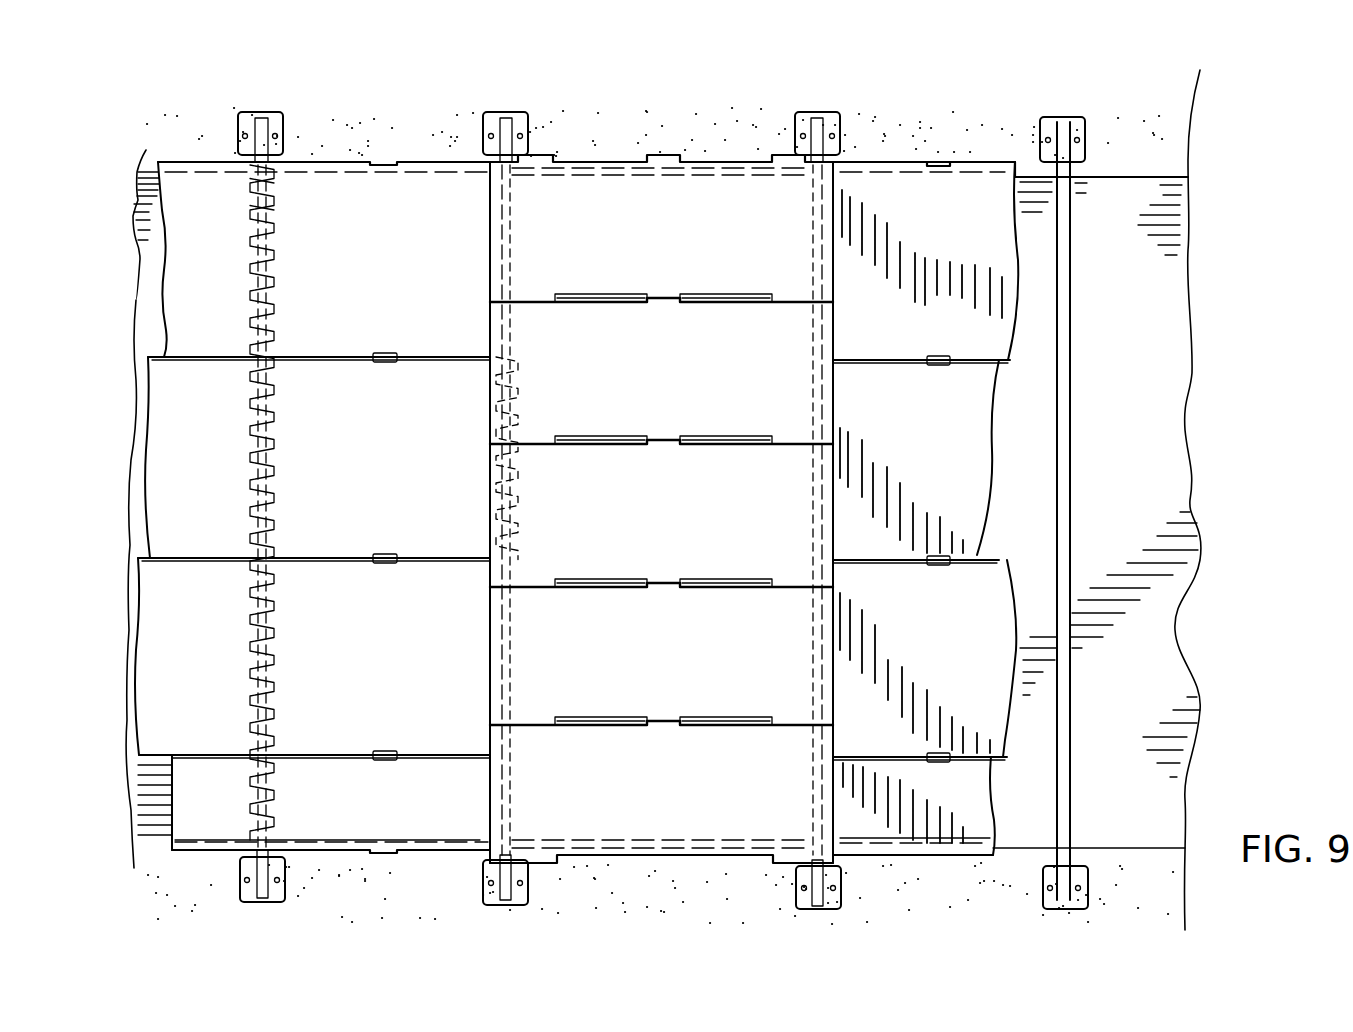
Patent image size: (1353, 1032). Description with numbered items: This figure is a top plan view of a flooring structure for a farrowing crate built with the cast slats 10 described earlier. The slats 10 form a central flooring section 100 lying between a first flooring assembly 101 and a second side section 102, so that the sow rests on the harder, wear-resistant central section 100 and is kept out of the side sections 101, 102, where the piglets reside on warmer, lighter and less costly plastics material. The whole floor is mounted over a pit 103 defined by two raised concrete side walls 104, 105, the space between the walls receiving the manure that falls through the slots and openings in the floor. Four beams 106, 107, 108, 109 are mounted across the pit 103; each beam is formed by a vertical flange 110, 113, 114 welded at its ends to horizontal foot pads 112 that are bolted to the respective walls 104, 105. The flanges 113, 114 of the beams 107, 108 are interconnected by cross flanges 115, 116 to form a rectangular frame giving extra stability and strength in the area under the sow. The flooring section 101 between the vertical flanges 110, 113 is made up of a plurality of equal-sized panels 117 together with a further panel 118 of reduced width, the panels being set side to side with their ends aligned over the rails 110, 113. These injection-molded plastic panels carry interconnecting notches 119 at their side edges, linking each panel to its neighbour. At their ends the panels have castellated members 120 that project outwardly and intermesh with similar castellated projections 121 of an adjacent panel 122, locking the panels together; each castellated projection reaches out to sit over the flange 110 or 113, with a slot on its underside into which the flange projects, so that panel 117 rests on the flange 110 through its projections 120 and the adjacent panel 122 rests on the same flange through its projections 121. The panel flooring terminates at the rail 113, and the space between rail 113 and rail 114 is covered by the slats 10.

The slat 10 is at (699, 162).
The central flooring section 100 is at (662, 137).
The first flooring assembly 101 is at (375, 146).
The side section 102 is at (921, 145).
The pit 103 is at (1162, 450).
The concrete side wall 104 is at (1100, 182).
The concrete side wall 105 is at (1095, 834).
The beam 106 is at (265, 104).
The beam 107 is at (512, 98).
The beam 108 is at (819, 110).
The beam 109 is at (1064, 112).
The vertical flange 110 is at (1068, 351).
The horizontal foot pad 112 is at (240, 888).
The vertical flange 113 is at (510, 678).
The vertical flange 114 is at (812, 490).
The cross flange 115 is at (606, 176).
The cross flange 116 is at (636, 842).
The panel 117 is at (394, 298).
The panel of reduced width 118 is at (385, 820).
The interconnecting notch 119 is at (386, 355).
The castellated member 120 is at (255, 375).
The castellated projection 121 is at (276, 388).
The adjacent panel 122 is at (208, 498).